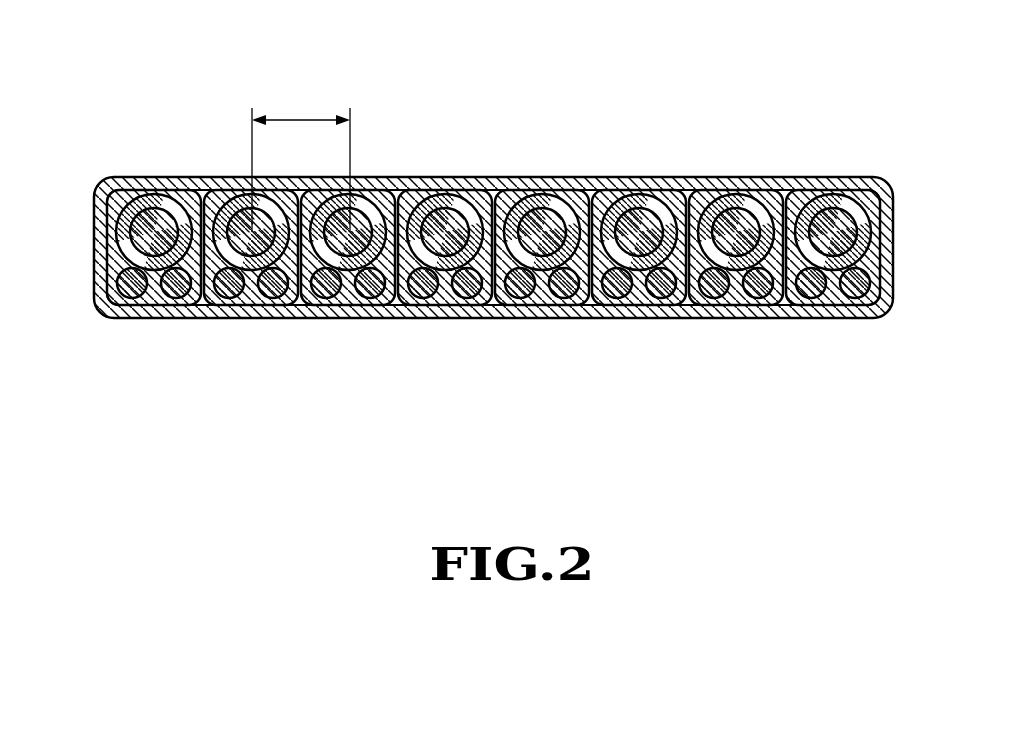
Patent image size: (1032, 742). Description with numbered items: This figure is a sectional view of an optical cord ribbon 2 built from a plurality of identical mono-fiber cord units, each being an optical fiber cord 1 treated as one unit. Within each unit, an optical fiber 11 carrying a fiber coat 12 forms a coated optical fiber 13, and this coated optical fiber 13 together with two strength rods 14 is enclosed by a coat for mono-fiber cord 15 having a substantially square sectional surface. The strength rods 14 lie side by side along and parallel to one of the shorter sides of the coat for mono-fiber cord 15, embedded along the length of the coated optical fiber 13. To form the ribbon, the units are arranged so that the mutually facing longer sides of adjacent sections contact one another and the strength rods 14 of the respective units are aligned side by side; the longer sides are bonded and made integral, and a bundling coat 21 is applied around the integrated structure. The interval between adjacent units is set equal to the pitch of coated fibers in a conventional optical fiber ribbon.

The mono-fiber cord 1 is at (511, 224).
The optical cord ribbon 2 is at (504, 224).
The optical fiber 11 is at (832, 212).
The fiber coat 12 is at (795, 185).
The coated optical fiber 13 is at (810, 147).
The strength rods 14 is at (854, 292).
The coat for mono-fiber cord 15 is at (866, 184).
The bundling coat 21 is at (689, 182).